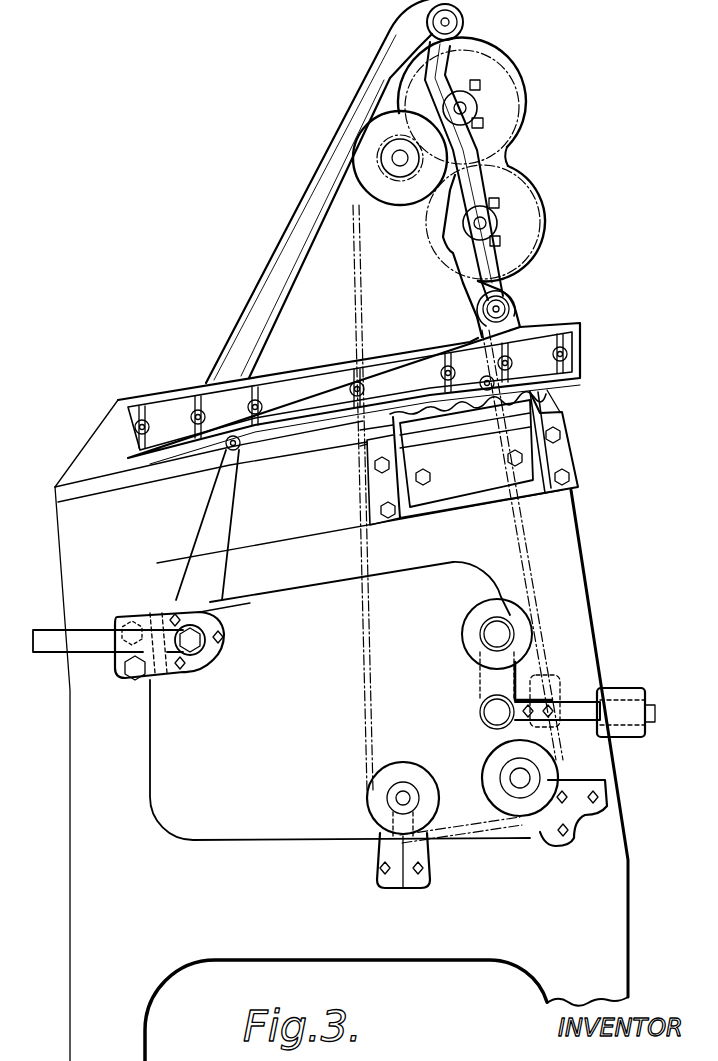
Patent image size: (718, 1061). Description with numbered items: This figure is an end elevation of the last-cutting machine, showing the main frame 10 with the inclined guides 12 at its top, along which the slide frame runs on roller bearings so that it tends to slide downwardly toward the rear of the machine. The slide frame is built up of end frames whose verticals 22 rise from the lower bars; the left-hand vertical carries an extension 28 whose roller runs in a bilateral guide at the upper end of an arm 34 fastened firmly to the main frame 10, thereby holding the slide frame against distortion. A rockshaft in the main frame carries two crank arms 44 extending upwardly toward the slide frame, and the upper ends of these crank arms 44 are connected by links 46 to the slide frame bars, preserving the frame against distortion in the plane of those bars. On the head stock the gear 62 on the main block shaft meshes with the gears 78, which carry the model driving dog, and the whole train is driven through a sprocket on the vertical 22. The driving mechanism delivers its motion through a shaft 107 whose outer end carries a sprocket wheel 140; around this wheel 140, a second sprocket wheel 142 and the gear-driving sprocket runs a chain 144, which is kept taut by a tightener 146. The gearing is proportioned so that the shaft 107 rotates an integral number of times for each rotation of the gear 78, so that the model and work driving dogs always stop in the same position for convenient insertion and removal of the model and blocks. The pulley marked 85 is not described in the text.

The main frame 10 is at (341, 730).
The guides 12 is at (382, 353).
The verticals 22 is at (472, 192).
The extension 28 is at (457, 3).
The arm 34 is at (523, 443).
The crank arms 44 is at (222, 507).
The links 46 is at (313, 423).
The gear 62 is at (517, 90).
The gears 78 is at (538, 227).
The idler pulley 85 is at (365, 140).
The shaft 107 is at (520, 783).
The sprocket wheel 140 is at (545, 765).
The sprocket wheel 142 is at (405, 777).
The chain 144 is at (520, 545).
The tightener 146 is at (500, 633).